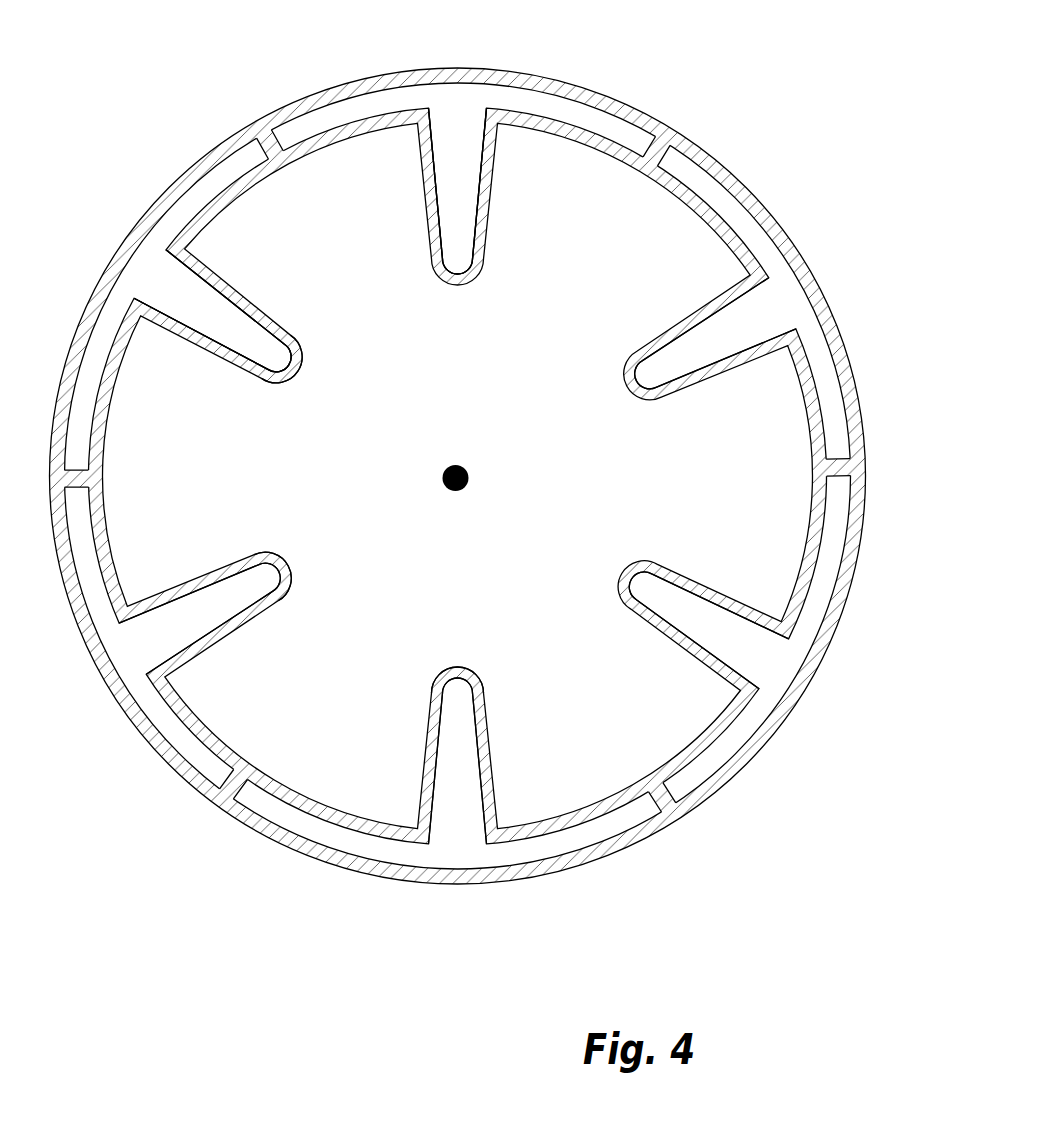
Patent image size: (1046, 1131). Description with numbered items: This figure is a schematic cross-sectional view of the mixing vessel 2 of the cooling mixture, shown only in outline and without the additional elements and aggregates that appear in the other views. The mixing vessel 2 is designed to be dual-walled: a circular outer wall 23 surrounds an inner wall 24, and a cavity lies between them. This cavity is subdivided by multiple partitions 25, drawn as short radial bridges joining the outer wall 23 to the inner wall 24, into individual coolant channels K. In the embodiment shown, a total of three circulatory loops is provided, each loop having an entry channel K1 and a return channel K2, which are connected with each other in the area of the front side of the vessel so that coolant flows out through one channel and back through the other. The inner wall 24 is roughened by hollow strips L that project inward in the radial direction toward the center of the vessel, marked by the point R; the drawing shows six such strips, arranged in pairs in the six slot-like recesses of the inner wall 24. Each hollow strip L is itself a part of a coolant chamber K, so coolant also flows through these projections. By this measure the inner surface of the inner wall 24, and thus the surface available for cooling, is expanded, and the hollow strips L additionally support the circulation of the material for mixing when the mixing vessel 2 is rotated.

The mixing vessel 2 is at (208, 118).
The outer wall 23 is at (250, 828).
The inner wall 24 is at (298, 795).
The partitions 25 is at (660, 158).
The coolant channel K is at (238, 338).
The entry channel K1 is at (468, 840).
The return channel K2 is at (770, 661).
The hollow strips L is at (445, 663).
The center point / axis R is at (446, 462).